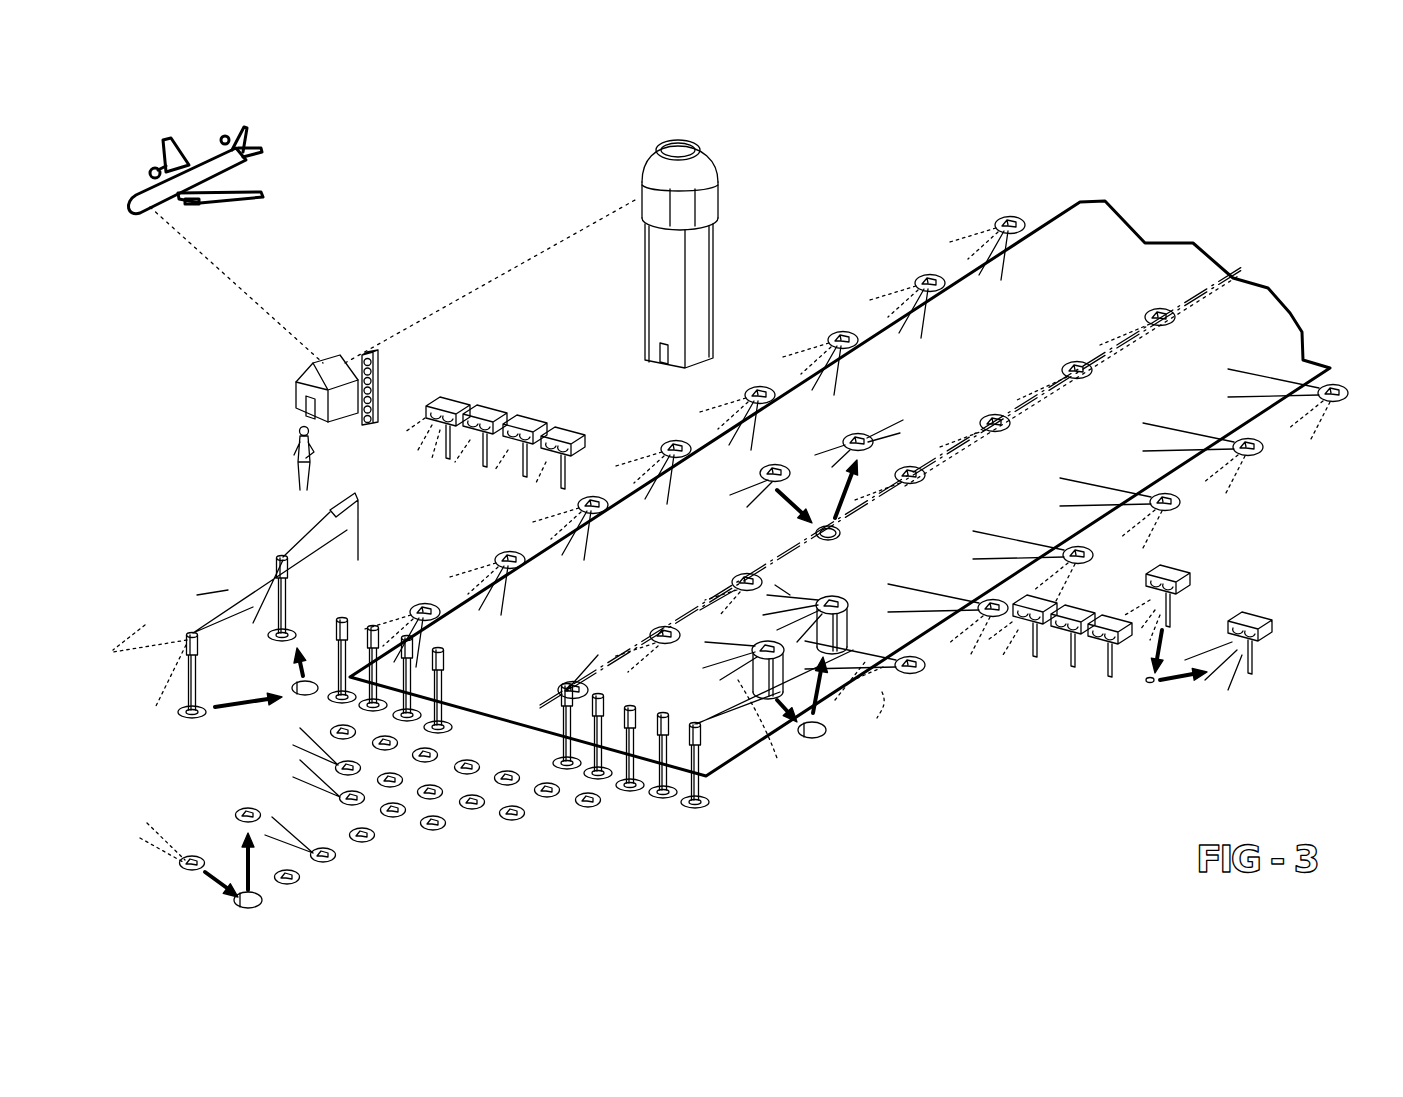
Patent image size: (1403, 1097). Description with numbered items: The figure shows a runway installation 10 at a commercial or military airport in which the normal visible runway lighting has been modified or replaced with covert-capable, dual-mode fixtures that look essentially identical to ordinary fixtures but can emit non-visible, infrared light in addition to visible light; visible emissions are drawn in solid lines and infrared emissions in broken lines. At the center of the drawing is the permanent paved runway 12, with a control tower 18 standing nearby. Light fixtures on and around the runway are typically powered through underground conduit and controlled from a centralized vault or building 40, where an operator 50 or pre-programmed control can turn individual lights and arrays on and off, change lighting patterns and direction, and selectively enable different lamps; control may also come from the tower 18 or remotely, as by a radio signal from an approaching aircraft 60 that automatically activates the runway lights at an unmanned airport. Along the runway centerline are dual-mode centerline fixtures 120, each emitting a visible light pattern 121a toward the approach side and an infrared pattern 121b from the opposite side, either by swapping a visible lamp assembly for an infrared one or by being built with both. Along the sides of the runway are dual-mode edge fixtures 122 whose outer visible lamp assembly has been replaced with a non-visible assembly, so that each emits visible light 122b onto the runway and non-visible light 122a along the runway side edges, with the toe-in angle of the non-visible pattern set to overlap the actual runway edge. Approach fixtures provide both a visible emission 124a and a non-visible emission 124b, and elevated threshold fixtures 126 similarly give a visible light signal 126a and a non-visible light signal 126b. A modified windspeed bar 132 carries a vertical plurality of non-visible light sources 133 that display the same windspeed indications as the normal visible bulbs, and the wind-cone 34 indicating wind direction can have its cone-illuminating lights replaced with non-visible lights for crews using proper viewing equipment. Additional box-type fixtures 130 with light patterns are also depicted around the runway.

The runway installation 10 is at (840, 212).
The runway 12 is at (890, 352).
The control tower 18 is at (713, 152).
The wind-sock or wind-cone 34 is at (335, 511).
The vault or building 40 is at (340, 357).
The operator 50 is at (296, 440).
The approaching aircraft 60 is at (236, 162).
The centerline fixtures 120 is at (857, 440).
The visible light pattern 121a is at (847, 452).
The infrared pattern 121b is at (755, 472).
The dual-mode fixtures 122 is at (770, 383).
The non-visible light 122a is at (952, 245).
The visible light 122b is at (1005, 285).
The visible light emission 124a is at (238, 803).
The non-visible light emission 124b is at (190, 858).
The elevated threshold fixtures 126 is at (190, 632).
The visible light signal 126a is at (215, 600).
The non-visible light signal 126b is at (160, 632).
The approach light fixture 130 is at (455, 404).
The windspeed bar 132 is at (378, 360).
The non-visible light sources 133 is at (378, 380).